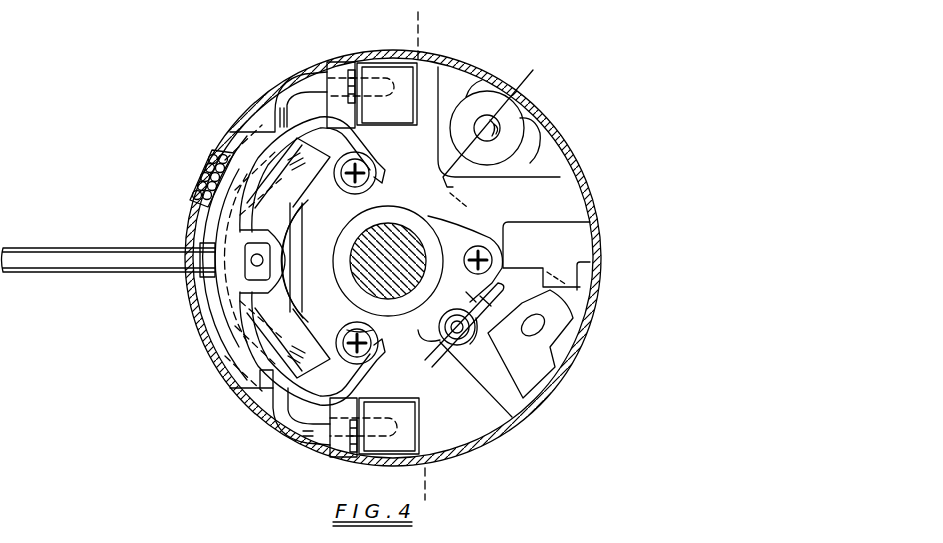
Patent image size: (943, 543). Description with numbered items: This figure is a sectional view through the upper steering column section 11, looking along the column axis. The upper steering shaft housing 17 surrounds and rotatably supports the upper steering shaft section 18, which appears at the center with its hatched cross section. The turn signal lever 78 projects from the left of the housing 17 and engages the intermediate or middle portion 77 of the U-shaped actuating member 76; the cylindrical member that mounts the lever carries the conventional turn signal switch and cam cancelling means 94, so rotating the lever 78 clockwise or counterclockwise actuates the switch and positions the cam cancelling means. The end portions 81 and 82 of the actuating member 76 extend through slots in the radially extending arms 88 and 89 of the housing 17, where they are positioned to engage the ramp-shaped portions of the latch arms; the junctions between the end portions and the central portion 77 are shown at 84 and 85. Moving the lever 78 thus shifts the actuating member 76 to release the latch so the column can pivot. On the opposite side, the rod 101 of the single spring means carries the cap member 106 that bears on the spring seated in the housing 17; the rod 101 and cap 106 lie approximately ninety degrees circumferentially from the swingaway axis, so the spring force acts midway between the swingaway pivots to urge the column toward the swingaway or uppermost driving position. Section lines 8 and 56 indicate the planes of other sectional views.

The upper steering column section 11 is at (648, 331).
The turn signal lever 78 is at (60, 257).
The U-shaped actuating member 76 is at (193, 223).
The intermediate or middle portion 77 is at (202, 287).
The turn signal switch and cam cancelling means 94 is at (241, 233).
The upper steering shaft housing 17 is at (232, 142).
The ramp-shaped portion 84 is at (292, 118).
The junction portion of actuating member 85 is at (282, 393).
The upper steering shaft section 18 is at (400, 243).
The radially extending arm 88 is at (340, 72).
The end portion of actuating member 81 is at (384, 72).
The radially extending arm 89 is at (343, 447).
The end portion of actuating member 82 is at (428, 423).
The section line 8- 8 is at (421, 30).
The cap 106 is at (508, 142).
The rod 101 is at (508, 120).
The switch blades / section line 5,6,7 56 is at (492, 53).